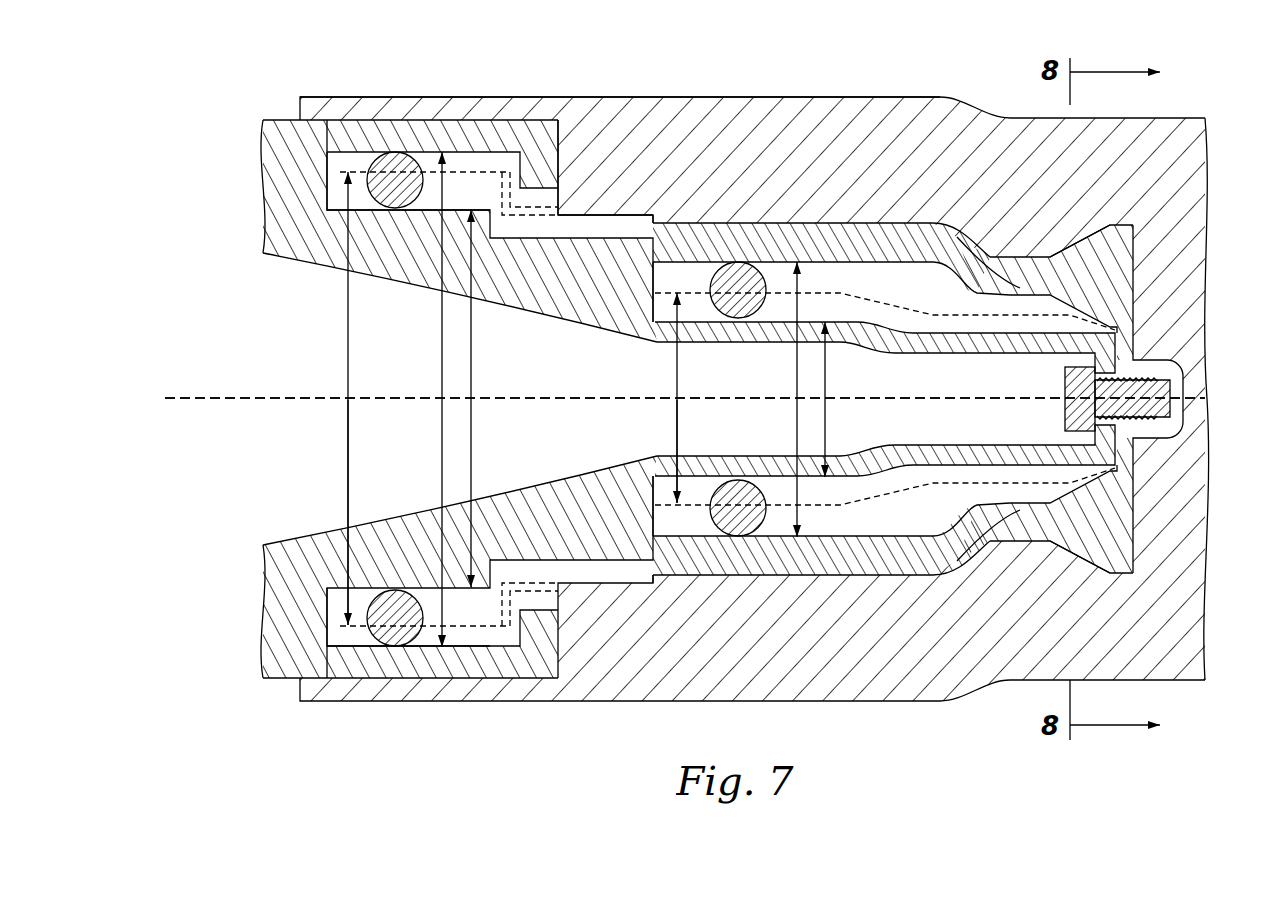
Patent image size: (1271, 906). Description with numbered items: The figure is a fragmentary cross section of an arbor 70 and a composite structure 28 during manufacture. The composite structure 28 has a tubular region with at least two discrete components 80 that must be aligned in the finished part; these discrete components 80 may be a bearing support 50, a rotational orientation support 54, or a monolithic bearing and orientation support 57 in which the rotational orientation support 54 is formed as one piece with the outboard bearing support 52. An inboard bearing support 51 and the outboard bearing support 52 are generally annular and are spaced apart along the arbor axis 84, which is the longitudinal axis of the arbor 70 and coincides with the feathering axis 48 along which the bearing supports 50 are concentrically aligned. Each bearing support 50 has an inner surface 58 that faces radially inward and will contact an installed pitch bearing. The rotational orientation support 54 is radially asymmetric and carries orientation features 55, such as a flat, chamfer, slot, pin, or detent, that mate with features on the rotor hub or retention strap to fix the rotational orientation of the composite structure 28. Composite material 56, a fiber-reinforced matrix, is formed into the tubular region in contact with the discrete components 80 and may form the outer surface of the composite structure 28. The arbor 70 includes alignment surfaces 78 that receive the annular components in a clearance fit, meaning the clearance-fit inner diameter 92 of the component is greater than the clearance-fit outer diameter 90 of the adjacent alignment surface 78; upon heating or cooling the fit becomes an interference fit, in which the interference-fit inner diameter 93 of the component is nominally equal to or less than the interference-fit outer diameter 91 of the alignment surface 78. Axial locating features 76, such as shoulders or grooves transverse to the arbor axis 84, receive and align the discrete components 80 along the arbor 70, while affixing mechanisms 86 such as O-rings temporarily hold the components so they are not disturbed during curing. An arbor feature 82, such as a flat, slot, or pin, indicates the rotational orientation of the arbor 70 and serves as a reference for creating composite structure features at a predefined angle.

The composite structure 28 is at (793, 95).
The feathering axis 48 is at (217, 398).
The bearing support 50 is at (556, 97).
The inboard bearing support 51 is at (564, 172).
The outboard bearing support 52 is at (800, 120).
The rotational orientation support 54 is at (1027, 253).
The orientation feature 55 is at (979, 333).
The composite material 56 is at (872, 118).
The monolithic bearing and orientation support 57 is at (887, 120).
The inner surface 58 is at (560, 648).
The arbor 70 is at (288, 530).
The axial locating feature 76 is at (327, 175).
The alignment surface 78 is at (527, 603).
The discrete component 80 is at (680, 221).
The arbor feature 82 is at (988, 258).
The arbor axis 84 is at (183, 398).
The affixing mechanism 86 is at (364, 163).
The clearance-fit outer diameter 90 is at (471, 370).
The interference-fit outer diameter 91 is at (348, 365).
The clearance-fit inner diameter 92 is at (442, 350).
The interference-fit inner diameter 93 is at (348, 447).